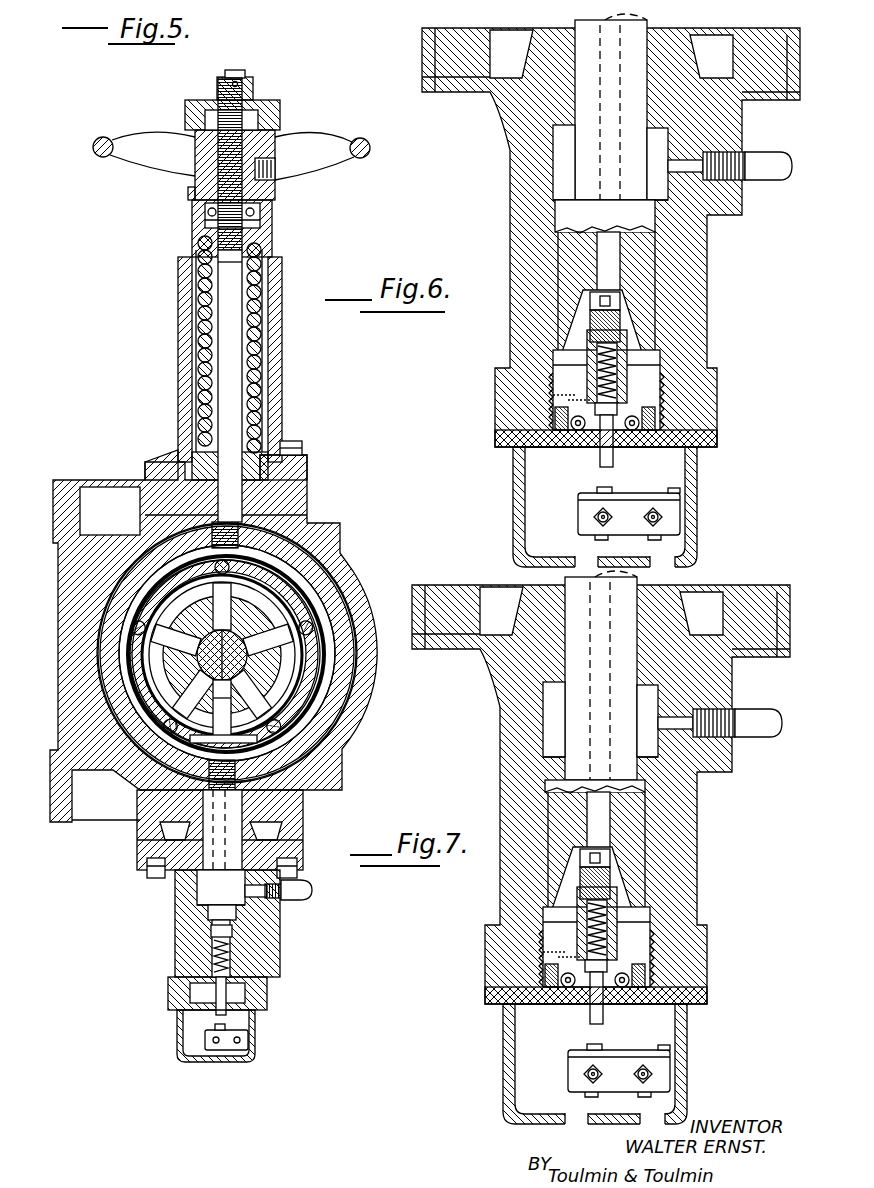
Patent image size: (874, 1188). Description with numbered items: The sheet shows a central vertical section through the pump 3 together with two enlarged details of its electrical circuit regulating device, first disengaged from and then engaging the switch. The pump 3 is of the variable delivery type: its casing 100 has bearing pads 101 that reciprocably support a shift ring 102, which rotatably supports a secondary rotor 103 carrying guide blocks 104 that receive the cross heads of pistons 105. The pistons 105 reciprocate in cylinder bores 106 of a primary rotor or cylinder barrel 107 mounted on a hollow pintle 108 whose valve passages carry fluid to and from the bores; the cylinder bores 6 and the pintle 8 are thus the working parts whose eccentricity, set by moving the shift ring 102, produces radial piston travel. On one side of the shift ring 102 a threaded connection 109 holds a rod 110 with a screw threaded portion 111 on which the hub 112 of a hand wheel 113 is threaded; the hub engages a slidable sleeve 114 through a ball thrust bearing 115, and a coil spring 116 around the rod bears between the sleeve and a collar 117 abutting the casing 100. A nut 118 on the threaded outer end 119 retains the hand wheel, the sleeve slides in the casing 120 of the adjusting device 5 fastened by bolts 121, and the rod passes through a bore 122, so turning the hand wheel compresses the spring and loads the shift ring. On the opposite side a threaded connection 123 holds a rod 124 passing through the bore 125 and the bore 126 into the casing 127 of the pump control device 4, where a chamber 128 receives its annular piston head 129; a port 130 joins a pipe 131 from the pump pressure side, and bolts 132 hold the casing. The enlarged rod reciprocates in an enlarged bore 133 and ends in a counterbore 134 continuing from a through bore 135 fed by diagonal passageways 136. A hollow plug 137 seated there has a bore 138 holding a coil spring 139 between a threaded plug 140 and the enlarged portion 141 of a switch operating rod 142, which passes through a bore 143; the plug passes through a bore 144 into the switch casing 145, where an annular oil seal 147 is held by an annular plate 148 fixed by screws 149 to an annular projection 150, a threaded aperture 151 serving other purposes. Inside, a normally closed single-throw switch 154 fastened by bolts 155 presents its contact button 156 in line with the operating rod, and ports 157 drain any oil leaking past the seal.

In FIG. 5, the pump 3 is at (362, 567).
In FIG. 5, the pump control device 4 is at (270, 962).
In FIG. 5, the adjusting device 5 is at (172, 310).
In FIG. 5, the cylinder bores 6 is at (262, 1030).
In FIG. 6, the pintle 8 is at (727, 433).
In FIG. 5, the casing 100 is at (313, 740).
In FIG. 5, the bearing pads 101 is at (85, 647).
In FIG. 5, the shift ring 102 is at (313, 750).
In FIG. 5, the secondary rotor 103 is at (317, 713).
In FIG. 5, the guide blocks 104 is at (130, 682).
In FIG. 5, the pistons 105 is at (313, 587).
In FIG. 5, the cylinder bores 106 is at (133, 707).
In FIG. 5, the primary rotor or cylinder barrel 107 is at (117, 763).
In FIG. 5, the hollow pintle 108 is at (237, 663).
In FIG. 5, the threaded connection 109 is at (222, 530).
In FIG. 5, the rod 110 is at (233, 413).
In FIG. 5, the screw threaded portion 111 is at (247, 108).
In FIG. 5, the hub 112 is at (192, 190).
In FIG. 5, the hand wheel 113 is at (372, 143).
In FIG. 5, the slidable sleeve 114 is at (270, 237).
In FIG. 5, the ball thrust bearing 115 is at (257, 208).
In FIG. 5, the coil spring 116 is at (260, 365).
In FIG. 5, the collar 117 is at (172, 452).
In FIG. 5, the nut 118 is at (247, 80).
In FIG. 5, the threaded outer end 119 is at (233, 72).
In FIG. 5, the casing 120 is at (182, 387).
In FIG. 5, the bolts 121 is at (305, 445).
In FIG. 5, the bore 122 is at (308, 493).
In FIG. 5, the threaded connection 123 is at (250, 780).
In FIG. 5, the rod 124 is at (137, 820).
In FIG. 6, the rod 124 is at (585, 32).
In FIG. 7, the rod 124 is at (578, 681).
In FIG. 5, the bore 125 is at (300, 830).
In FIG. 5, the bore 126 is at (140, 840).
In FIG. 6, the bore 126 is at (663, 37).
In FIG. 7, the bore 126 is at (688, 602).
In FIG. 5, the casing 127 is at (177, 952).
In FIG. 6, the casing 127 is at (510, 132).
In FIG. 7, the casing 127 is at (601, 794).
In FIG. 5, the chamber 128 is at (197, 883).
In FIG. 6, the chamber 128 is at (557, 157).
In FIG. 7, the chamber 128 is at (558, 719).
In FIG. 5, the annular piston head 129 is at (197, 903).
In FIG. 6, the annular piston head 129 is at (565, 195).
In FIG. 7, the annular piston head 129 is at (555, 753).
In FIG. 5, the port 130 is at (262, 890).
In FIG. 6, the port 130 is at (703, 162).
In FIG. 7, the port 130 is at (721, 703).
In FIG. 5, the pipe 131 is at (307, 888).
In FIG. 6, the pipe 131 is at (778, 167).
In FIG. 7, the pipe 131 is at (757, 715).
In FIG. 5, the bolts 132 is at (300, 868).
In FIG. 5, the enlarged bore 133 is at (240, 943).
In FIG. 6, the enlarged bore 133 is at (657, 263).
In FIG. 7, the enlarged bore 133 is at (647, 846).
In FIG. 6, the counterbore 134 is at (570, 342).
In FIG. 7, the counterbore 134 is at (533, 919).
In FIG. 6, the bore 135 is at (612, 240).
In FIG. 7, the bore 135 is at (595, 788).
In FIG. 6, the diagonal passageways 136 is at (575, 330).
In FIG. 7, the diagonal passageways 136 is at (601, 878).
In FIG. 5, the hollow plug 137 is at (227, 982).
In FIG. 6, the hollow plug 137 is at (627, 358).
In FIG. 7, the hollow plug 137 is at (664, 925).
In FIG. 6, the bore 138 is at (577, 368).
In FIG. 7, the bore 138 is at (547, 943).
In FIG. 6, the coil spring 139 is at (553, 377).
In FIG. 7, the coil spring 139 is at (511, 930).
In FIG. 6, the plug 140 is at (609, 293).
In FIG. 7, the plug 140 is at (662, 863).
In FIG. 6, the enlarged portion 141 is at (617, 408).
In FIG. 7, the enlarged portion 141 is at (620, 954).
In FIG. 5, the switch operating rod 142 is at (217, 1015).
In FIG. 6, the switch operating rod 142 is at (600, 462).
In FIG. 7, the switch operating rod 142 is at (574, 1009).
In FIG. 6, the bore 143 is at (590, 447).
In FIG. 7, the bore 143 is at (551, 1001).
In FIG. 6, the bore 144 is at (628, 443).
In FIG. 7, the bore 144 is at (640, 1002).
In FIG. 6, the switch casing 145 is at (693, 475).
In FIG. 7, the switch casing 145 is at (618, 1064).
In FIG. 6, the annular oil seal 147 is at (517, 448).
In FIG. 7, the annular oil seal 147 is at (583, 1009).
In FIG. 6, the annular plate 148 is at (655, 410).
In FIG. 7, the annular plate 148 is at (698, 966).
In FIG. 6, the screws 149 is at (655, 398).
In FIG. 7, the screws 149 is at (684, 953).
In FIG. 6, the annular projection 150 is at (555, 423).
In FIG. 7, the annular projection 150 is at (498, 975).
In FIG. 6, the threaded aperture 151 is at (558, 400).
In FIG. 7, the threaded aperture 151 is at (509, 950).
In FIG. 5, the normally closed single-throw switch 154 is at (230, 1050).
In FIG. 6, the normally closed single-throw switch 154 is at (683, 497).
In FIG. 7, the normally closed single-throw switch 154 is at (651, 1068).
In FIG. 6, the bolts 155 is at (651, 524).
In FIG. 7, the bolts 155 is at (618, 1087).
In FIG. 5, the contact button 156 is at (213, 1027).
In FIG. 6, the contact button 156 is at (612, 487).
In FIG. 7, the contact button 156 is at (628, 1039).
In FIG. 6, the ports 157 is at (577, 552).
In FIG. 7, the ports 157 is at (622, 1114).